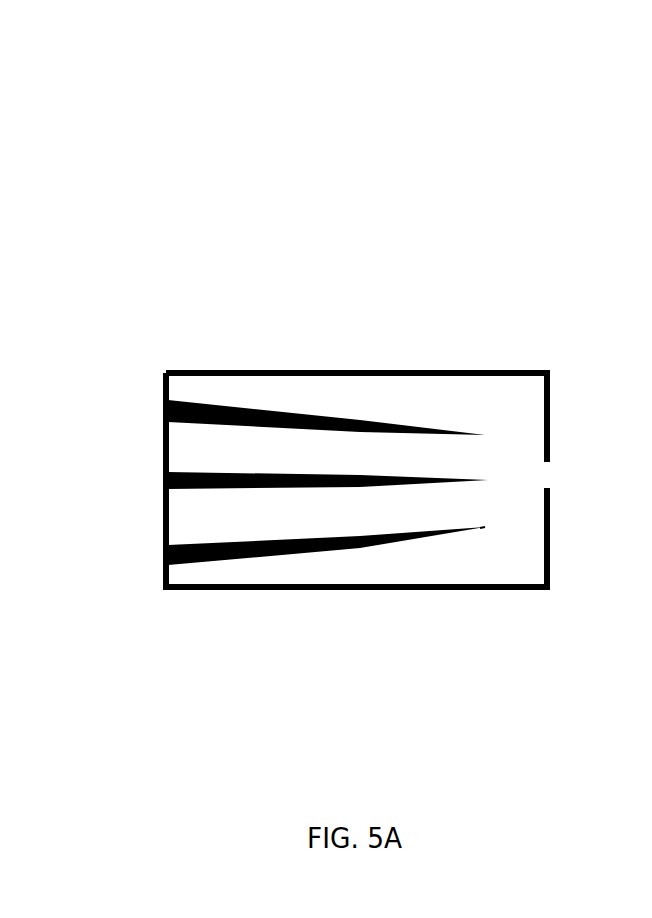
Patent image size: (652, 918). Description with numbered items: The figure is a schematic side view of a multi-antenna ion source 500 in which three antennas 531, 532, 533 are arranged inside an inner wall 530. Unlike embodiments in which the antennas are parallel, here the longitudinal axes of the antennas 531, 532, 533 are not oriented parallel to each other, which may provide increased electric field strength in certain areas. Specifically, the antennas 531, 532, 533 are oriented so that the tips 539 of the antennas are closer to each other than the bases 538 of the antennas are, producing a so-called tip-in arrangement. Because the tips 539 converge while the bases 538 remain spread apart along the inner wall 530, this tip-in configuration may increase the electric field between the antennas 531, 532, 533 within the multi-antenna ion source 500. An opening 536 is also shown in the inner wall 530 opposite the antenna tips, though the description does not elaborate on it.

The multi-antenna ion source 500 is at (374, 182).
The inner wall 530 is at (420, 372).
The antenna 531 is at (276, 477).
The antenna 532 is at (233, 412).
The antenna 533 is at (248, 548).
The output aperture 536 is at (550, 475).
The base 538 is at (165, 555).
The tip 539 is at (485, 527).